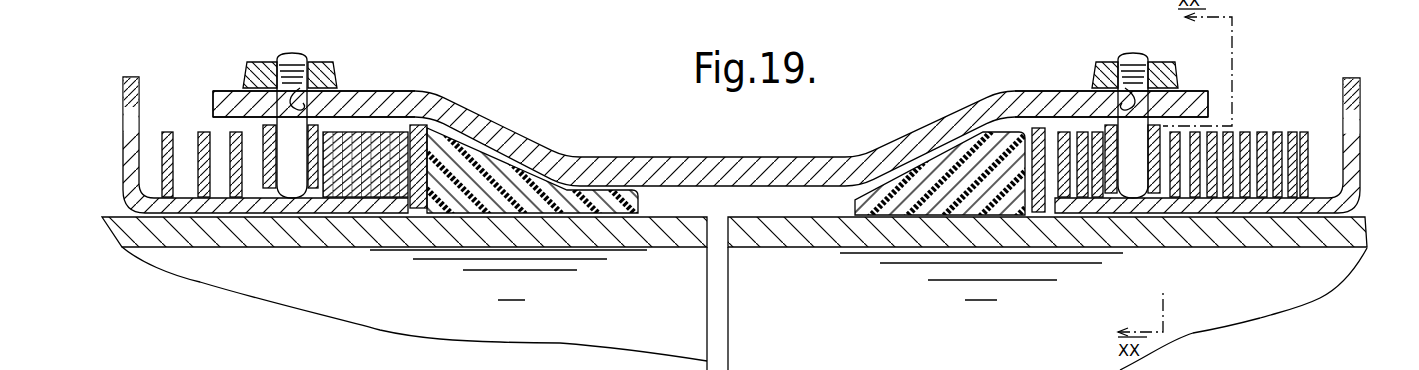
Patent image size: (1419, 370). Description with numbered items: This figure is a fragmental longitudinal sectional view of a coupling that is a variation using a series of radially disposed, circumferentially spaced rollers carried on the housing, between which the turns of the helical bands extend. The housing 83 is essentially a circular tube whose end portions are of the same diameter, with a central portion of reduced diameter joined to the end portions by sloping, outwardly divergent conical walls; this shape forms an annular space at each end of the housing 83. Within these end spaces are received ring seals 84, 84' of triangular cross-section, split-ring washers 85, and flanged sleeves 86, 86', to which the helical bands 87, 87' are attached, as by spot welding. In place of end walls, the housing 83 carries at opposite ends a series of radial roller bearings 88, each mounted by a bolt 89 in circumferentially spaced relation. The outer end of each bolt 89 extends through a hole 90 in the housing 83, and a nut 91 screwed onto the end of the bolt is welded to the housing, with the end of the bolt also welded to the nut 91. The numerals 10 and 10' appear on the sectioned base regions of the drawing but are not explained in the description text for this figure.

The base plate 10 is at (391, 274).
The base plate (right half) 10' is at (1047, 293).
The housing 83 is at (651, 157).
The ring seal 84 is at (532, 155).
The ring seal 84' is at (940, 147).
The split-ring washer 85 is at (418, 126).
The flanged sleeve 86 is at (239, 145).
The flanged sleeve 86' is at (1237, 136).
The helical band 87 is at (202, 138).
The helical band 87' is at (1189, 129).
The radial roller bearing 88 is at (367, 96).
The bolt 89 is at (294, 55).
The hole 90 is at (310, 92).
The nut 91 is at (252, 62).